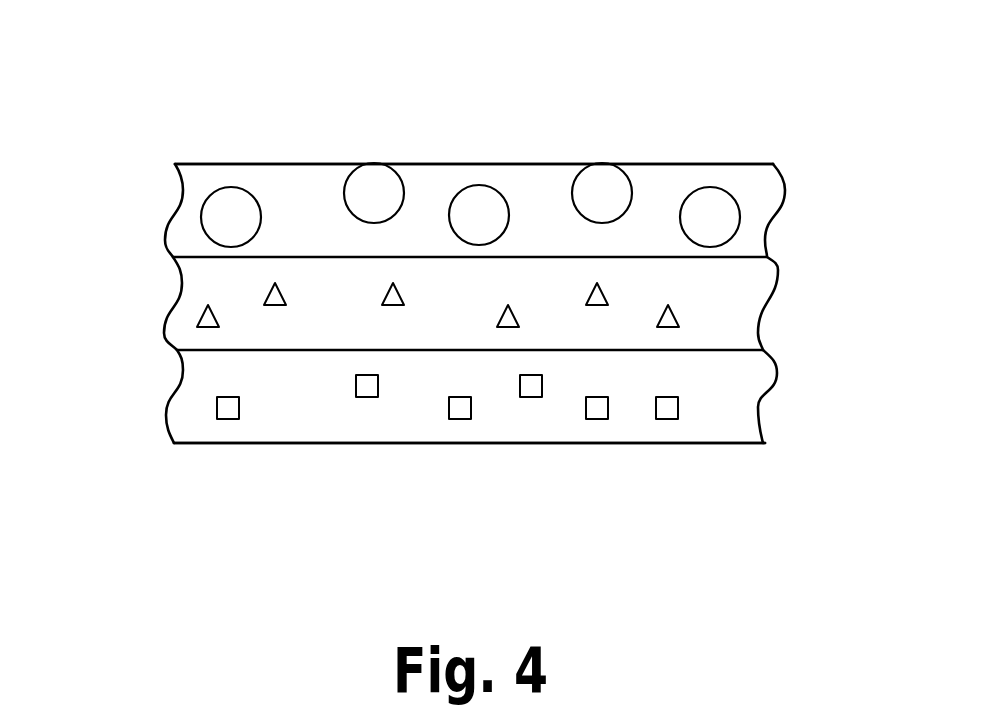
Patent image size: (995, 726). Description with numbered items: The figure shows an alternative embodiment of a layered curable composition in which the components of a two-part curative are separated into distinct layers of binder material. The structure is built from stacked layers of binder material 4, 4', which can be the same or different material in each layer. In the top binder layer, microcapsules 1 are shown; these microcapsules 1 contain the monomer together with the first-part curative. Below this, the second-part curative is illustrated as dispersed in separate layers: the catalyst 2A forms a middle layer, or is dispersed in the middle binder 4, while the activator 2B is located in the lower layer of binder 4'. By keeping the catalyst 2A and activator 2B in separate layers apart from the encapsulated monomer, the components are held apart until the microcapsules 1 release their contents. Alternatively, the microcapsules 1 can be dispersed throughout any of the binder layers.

The microcapsules 1 is at (373, 182).
The catalyst 2A is at (203, 313).
The activator 2B is at (532, 393).
The binder material 4 is at (518, 303).
The binder material 4' is at (413, 408).